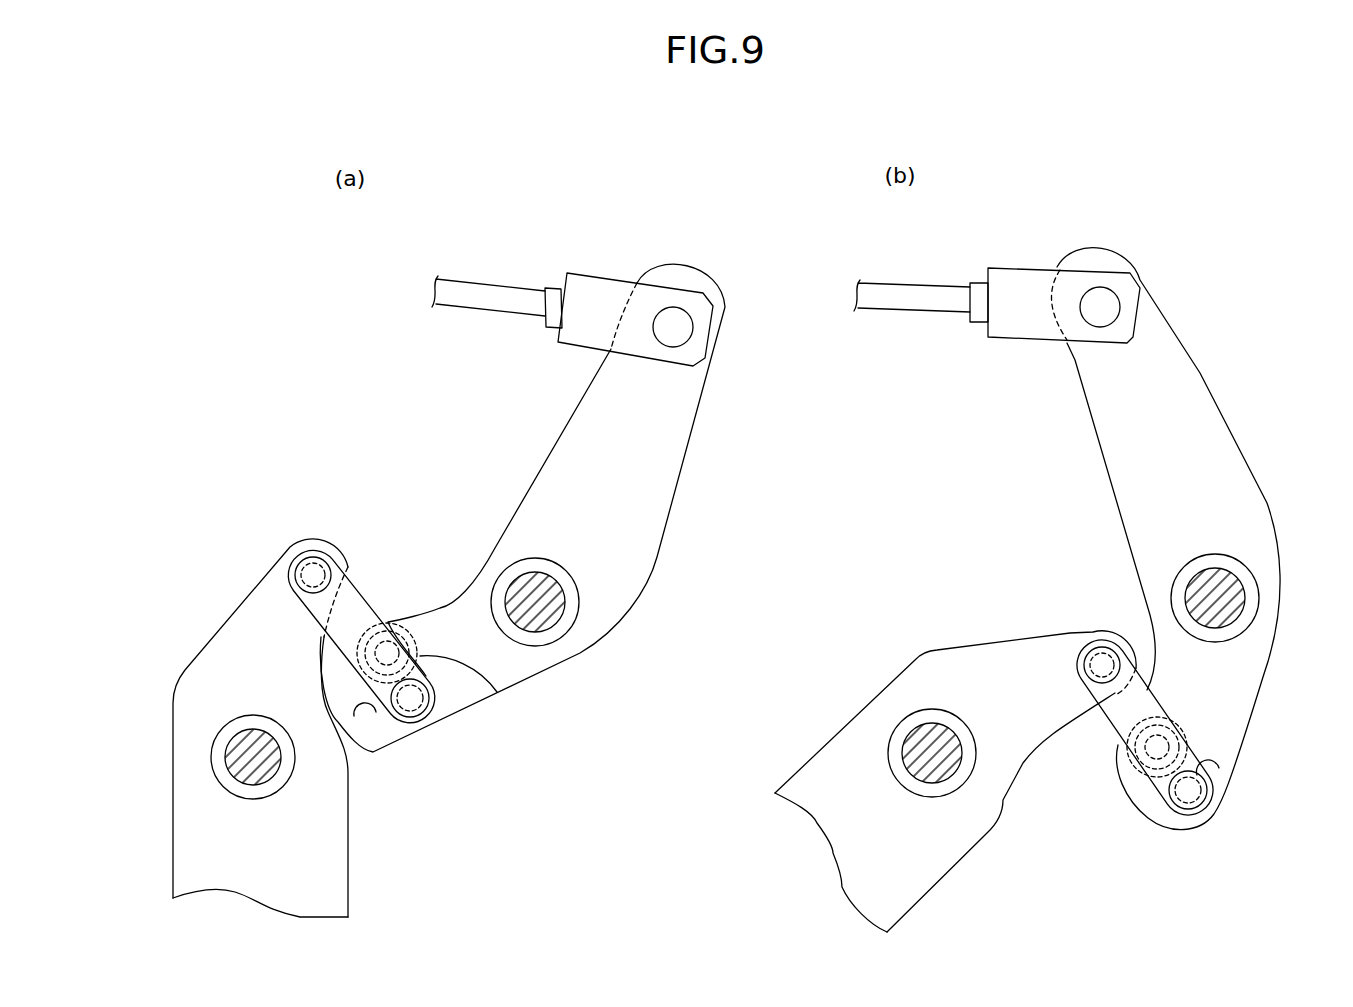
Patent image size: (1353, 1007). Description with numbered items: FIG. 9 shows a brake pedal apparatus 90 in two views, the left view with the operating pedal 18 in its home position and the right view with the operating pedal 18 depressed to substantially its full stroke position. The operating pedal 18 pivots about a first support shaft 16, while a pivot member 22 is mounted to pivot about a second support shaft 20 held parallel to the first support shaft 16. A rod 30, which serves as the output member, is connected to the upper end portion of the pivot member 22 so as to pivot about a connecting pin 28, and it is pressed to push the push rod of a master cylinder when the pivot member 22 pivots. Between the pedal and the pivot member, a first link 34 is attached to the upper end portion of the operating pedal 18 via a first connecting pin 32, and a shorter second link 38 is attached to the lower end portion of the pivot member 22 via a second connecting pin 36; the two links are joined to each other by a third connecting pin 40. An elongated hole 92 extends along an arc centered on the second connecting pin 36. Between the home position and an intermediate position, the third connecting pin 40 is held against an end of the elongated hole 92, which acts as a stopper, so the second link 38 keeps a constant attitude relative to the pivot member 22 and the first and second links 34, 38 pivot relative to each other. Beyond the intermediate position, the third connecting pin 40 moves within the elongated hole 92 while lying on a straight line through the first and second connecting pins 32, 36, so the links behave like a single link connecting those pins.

The first support shaft 16 is at (242, 745).
The operating pedal 18 is at (338, 896).
The second support shaft 20 is at (548, 618).
The pivot member 22 is at (637, 545).
The connecting pin 28 is at (678, 328).
The rod 30 is at (481, 296).
The first connecting pin 32 is at (313, 568).
The first link 34 is at (357, 602).
The second connecting pin 36 is at (401, 632).
The second link 38 is at (496, 694).
The third connecting pin 40 is at (407, 700).
The brake pedal apparatus 90 is at (317, 339).
The elongated hole 92 is at (360, 717).